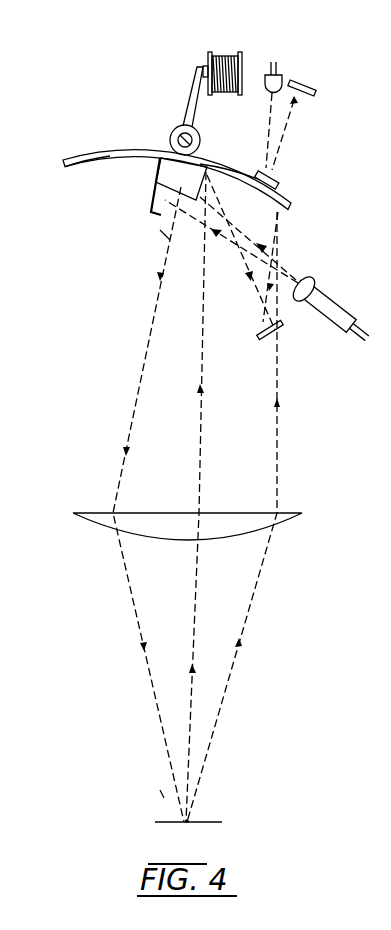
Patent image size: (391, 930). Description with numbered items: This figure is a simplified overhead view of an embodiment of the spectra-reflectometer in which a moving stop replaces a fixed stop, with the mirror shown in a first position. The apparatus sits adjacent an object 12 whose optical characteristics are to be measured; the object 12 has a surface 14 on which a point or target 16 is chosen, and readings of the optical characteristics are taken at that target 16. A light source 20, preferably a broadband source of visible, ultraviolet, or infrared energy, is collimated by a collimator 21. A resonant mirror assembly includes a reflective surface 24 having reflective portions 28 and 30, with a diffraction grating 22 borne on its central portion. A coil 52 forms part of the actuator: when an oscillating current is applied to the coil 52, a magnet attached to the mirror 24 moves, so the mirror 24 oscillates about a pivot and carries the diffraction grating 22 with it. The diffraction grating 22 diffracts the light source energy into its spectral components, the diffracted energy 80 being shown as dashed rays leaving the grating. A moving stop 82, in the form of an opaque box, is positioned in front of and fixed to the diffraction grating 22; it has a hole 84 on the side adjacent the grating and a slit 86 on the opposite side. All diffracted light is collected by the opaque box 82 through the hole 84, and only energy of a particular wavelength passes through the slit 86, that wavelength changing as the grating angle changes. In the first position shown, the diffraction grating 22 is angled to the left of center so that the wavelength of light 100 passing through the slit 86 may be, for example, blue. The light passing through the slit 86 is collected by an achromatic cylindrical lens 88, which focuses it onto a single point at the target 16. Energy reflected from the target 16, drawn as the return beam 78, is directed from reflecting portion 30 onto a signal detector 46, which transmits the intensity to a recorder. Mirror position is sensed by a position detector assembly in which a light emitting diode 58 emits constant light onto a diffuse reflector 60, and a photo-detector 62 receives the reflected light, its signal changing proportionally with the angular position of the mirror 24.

The object 12 is at (161, 793).
The object surface 14 is at (210, 822).
The target 16 is at (187, 822).
The light source 20 is at (336, 303).
The collimator 21 is at (316, 273).
The diffraction grating 22 is at (160, 170).
The reflective surface 24 is at (137, 150).
The reflective portion 28 is at (95, 168).
The reflective portion 30 is at (233, 182).
The signal detector 46 is at (284, 327).
The coil 52 is at (226, 52).
The light emitting diode 58 is at (280, 74).
The diffuse reflector 60 is at (276, 178).
The detector 62 is at (313, 86).
The return beam 78 is at (253, 595).
The illumination beam 80 is at (255, 296).
The moving stop 82 is at (152, 205).
The hole 84 is at (205, 150).
The slit 86 is at (157, 231).
The achromatic cylindrical lens 88 is at (100, 524).
The wavelength of light 100 is at (151, 325).